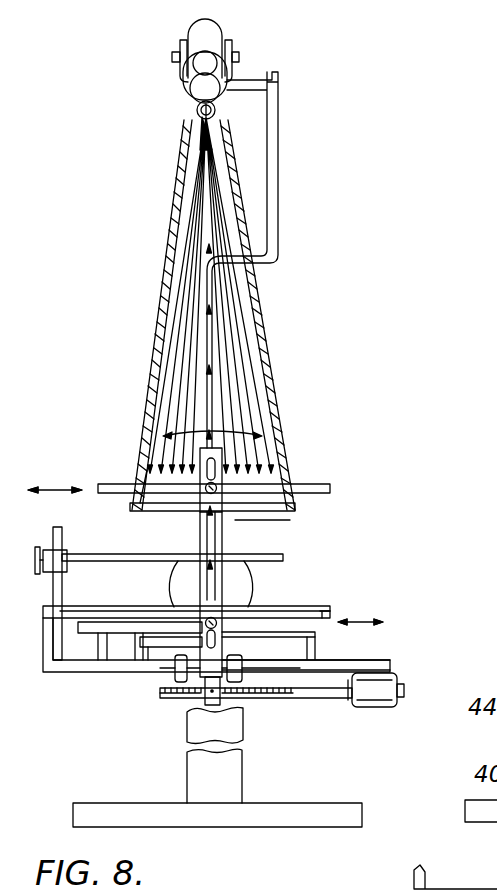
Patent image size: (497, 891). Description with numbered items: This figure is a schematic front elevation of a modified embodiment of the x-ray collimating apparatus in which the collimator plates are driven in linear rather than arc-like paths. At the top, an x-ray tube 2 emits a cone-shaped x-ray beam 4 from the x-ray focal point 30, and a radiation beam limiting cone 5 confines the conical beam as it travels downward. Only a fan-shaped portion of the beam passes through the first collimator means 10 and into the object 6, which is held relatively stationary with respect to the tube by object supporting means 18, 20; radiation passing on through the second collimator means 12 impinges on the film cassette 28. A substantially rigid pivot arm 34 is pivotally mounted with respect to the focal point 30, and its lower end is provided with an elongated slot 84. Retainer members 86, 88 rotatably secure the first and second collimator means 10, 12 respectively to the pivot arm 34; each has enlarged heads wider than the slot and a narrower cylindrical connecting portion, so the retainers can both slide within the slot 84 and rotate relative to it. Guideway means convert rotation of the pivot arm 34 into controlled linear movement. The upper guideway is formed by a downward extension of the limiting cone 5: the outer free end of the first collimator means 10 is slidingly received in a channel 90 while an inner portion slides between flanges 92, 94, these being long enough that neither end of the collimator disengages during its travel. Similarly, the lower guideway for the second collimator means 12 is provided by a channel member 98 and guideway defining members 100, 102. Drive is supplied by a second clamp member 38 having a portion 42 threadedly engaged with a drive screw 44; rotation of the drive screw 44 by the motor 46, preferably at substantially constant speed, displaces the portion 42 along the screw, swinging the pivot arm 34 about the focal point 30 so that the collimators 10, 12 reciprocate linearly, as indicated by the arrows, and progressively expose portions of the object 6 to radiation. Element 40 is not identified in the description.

The x-ray tube 2 is at (190, 115).
The x-ray beam 4 is at (188, 313).
The radiation beam limiting cone 5 is at (263, 322).
The object 6 is at (168, 585).
The first collimator means 10 is at (331, 488).
The second collimator means 12 is at (127, 640).
The object supporting means 18 is at (282, 558).
The object supporting means 20 is at (278, 608).
The film cassette 28 is at (160, 642).
The x-ray focal point 30 is at (185, 102).
The pivot arm 34 is at (282, 163).
The second clamp member 38 is at (221, 700).
The support post 40 is at (188, 770).
The portion of clamp 42 is at (175, 710).
The drive screw 44 is at (273, 699).
The motor 46 is at (375, 706).
The elongated slot 84 is at (205, 520).
The retainer member 86 is at (262, 530).
The retainer member 88 is at (253, 592).
The channel 90 is at (282, 485).
The flange 92 is at (147, 445).
The flange 94 is at (140, 510).
The channel member 98 is at (327, 618).
The guideway defining member 100 is at (335, 617).
The guideway defining member 102 is at (335, 627).